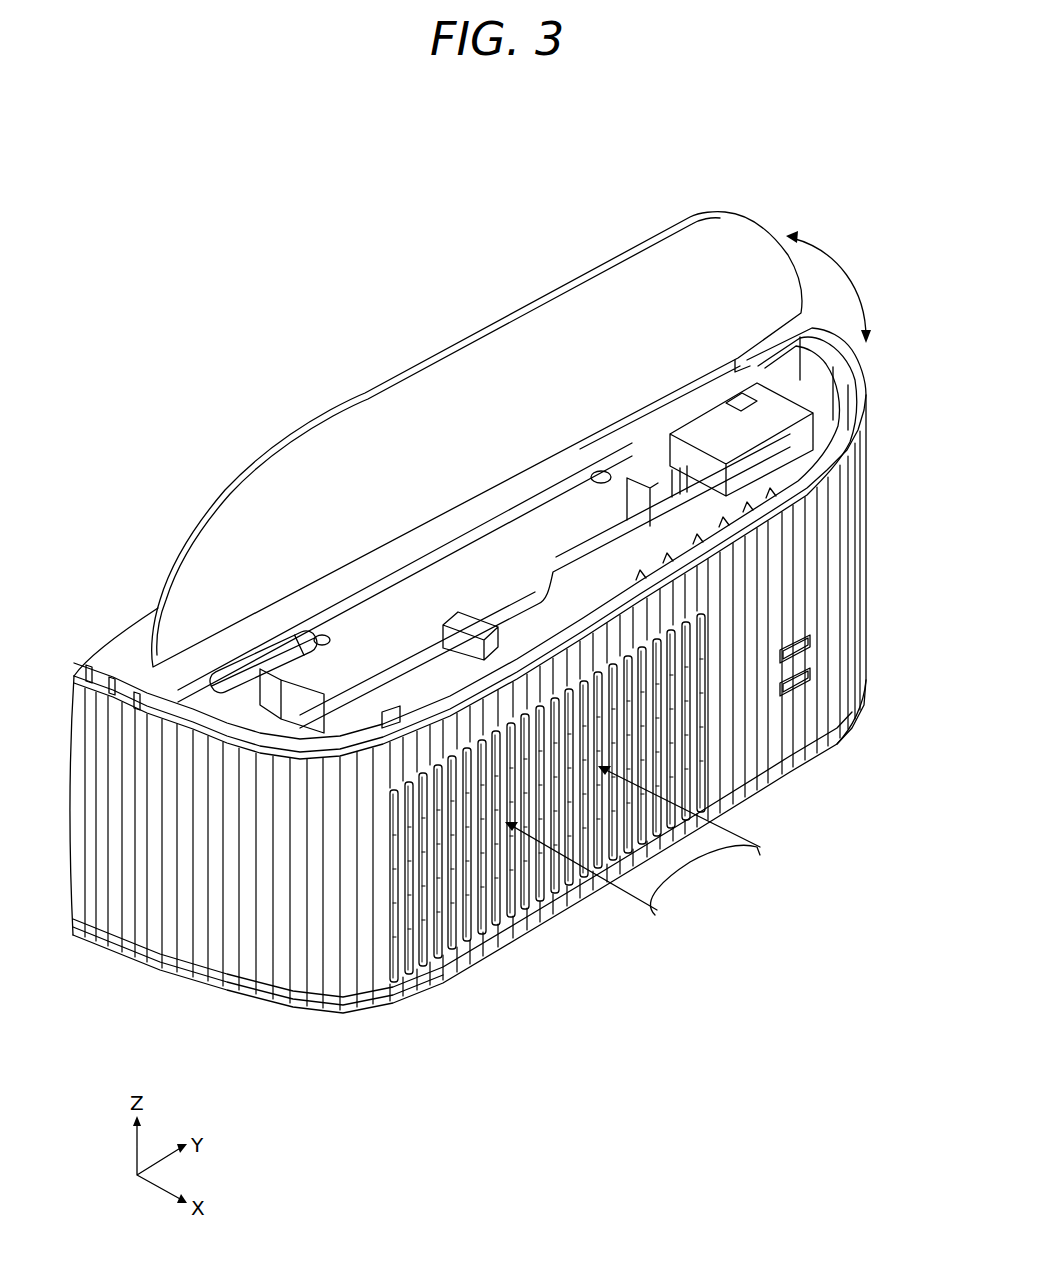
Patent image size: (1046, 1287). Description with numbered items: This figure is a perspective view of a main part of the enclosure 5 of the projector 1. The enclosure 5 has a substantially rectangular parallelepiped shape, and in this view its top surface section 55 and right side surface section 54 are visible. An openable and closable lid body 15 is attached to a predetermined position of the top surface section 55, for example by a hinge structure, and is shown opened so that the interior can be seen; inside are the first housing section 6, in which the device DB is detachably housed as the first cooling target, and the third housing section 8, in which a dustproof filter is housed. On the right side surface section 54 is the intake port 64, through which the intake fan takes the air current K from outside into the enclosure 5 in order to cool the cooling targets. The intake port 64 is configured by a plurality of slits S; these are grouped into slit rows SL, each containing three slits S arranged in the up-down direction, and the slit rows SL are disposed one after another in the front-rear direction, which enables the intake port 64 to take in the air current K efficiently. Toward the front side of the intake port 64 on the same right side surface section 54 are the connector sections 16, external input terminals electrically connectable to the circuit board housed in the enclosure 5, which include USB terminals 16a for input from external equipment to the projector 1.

The projector 1 is at (501, 564).
The enclosure 5 is at (501, 680).
The first housing section 6 is at (660, 532).
The third housing section 8 is at (527, 560).
The lid body 15 is at (744, 241).
The connector sections 16 is at (852, 725).
The USB terminals 16a is at (812, 640).
The right side surface section 54 is at (797, 565).
The top surface section 55 is at (116, 660).
The intake port 64 is at (547, 823).
The slit rows SL is at (568, 893).
The slits S is at (700, 648).
The air current K is at (690, 900).